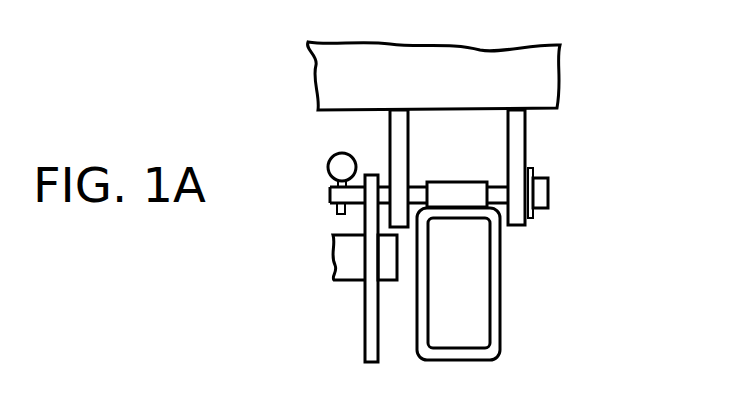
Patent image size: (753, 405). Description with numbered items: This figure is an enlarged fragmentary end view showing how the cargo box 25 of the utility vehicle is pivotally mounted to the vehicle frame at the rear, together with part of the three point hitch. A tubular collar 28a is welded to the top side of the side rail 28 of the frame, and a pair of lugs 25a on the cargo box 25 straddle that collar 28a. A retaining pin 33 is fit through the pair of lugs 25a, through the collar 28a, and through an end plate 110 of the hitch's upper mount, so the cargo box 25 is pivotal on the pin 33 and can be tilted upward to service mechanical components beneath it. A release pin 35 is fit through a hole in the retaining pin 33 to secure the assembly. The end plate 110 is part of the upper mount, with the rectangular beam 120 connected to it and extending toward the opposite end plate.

The cargo box 25 is at (566, 73).
The lugs 25a is at (533, 139).
The side rail 28 is at (500, 290).
The tubular collar 28a is at (465, 182).
The retaining pin 33 is at (541, 176).
The release pin 35 is at (329, 163).
The end plate 110 is at (365, 328).
The rectangular beam 120 is at (345, 281).